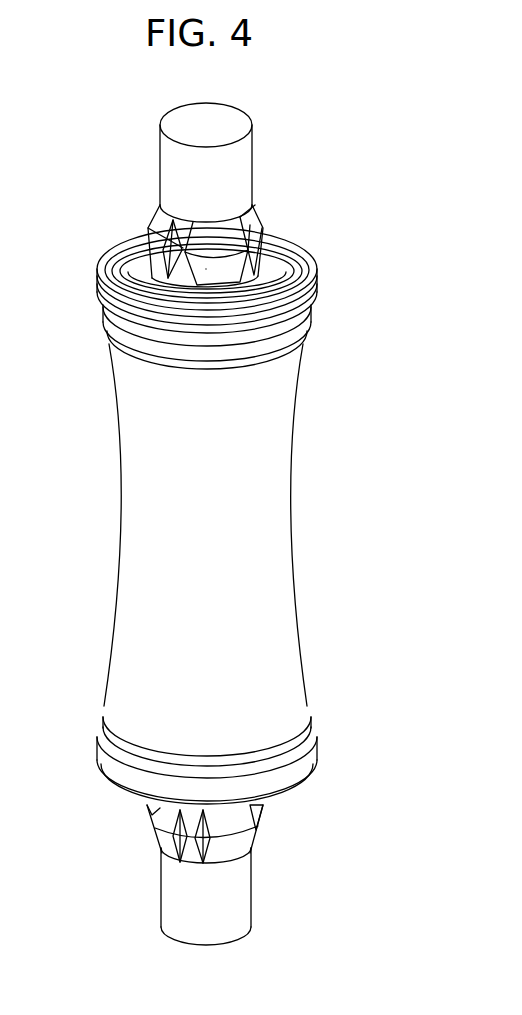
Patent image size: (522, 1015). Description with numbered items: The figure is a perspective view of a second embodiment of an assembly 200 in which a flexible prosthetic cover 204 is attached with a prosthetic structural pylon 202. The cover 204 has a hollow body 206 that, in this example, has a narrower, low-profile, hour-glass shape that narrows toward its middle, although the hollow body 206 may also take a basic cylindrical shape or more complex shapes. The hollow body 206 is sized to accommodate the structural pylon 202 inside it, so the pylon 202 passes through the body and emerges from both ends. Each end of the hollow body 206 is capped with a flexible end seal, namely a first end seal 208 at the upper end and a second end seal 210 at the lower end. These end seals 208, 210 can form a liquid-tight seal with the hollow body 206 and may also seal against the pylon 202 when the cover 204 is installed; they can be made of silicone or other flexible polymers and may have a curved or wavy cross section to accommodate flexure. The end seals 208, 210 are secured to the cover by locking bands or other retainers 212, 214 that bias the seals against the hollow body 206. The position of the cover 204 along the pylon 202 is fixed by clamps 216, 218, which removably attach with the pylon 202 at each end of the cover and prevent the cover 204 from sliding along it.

The assembly 200 is at (275, 123).
The prosthetic structural pylon 202 is at (168, 165).
The flexible prosthetic cover 204 is at (310, 467).
The hollow body 206 is at (120, 513).
The first flexible end seal 208 is at (311, 281).
The second flexible end seal 210 is at (285, 792).
The retainer 212 is at (100, 310).
The retainer 214 is at (97, 740).
The clamp 216 is at (153, 230).
The clamp 218 is at (243, 827).